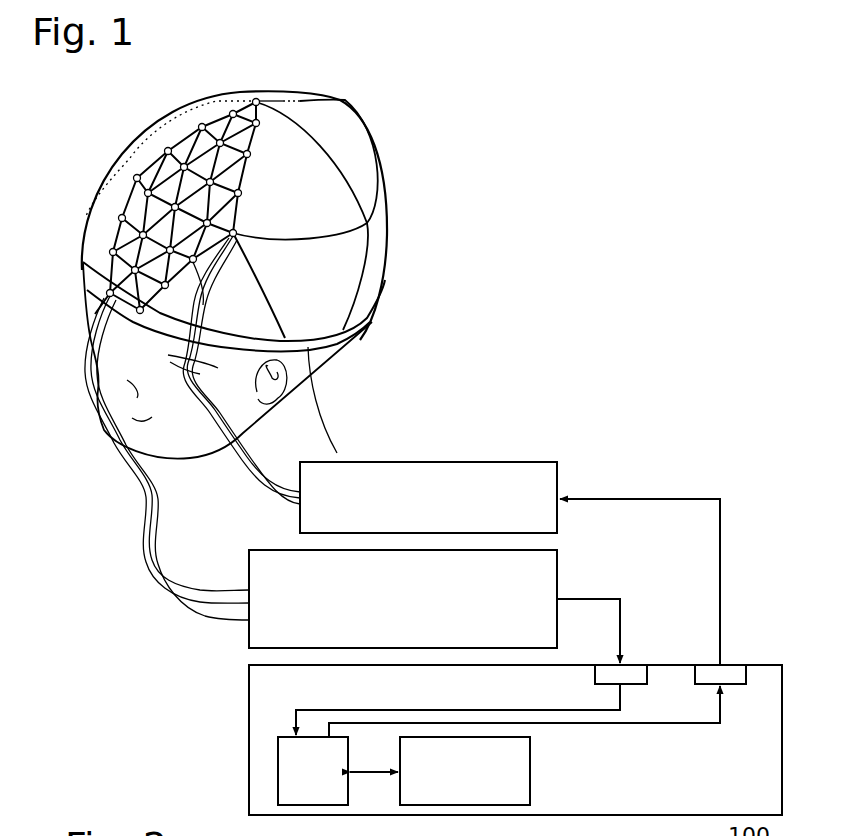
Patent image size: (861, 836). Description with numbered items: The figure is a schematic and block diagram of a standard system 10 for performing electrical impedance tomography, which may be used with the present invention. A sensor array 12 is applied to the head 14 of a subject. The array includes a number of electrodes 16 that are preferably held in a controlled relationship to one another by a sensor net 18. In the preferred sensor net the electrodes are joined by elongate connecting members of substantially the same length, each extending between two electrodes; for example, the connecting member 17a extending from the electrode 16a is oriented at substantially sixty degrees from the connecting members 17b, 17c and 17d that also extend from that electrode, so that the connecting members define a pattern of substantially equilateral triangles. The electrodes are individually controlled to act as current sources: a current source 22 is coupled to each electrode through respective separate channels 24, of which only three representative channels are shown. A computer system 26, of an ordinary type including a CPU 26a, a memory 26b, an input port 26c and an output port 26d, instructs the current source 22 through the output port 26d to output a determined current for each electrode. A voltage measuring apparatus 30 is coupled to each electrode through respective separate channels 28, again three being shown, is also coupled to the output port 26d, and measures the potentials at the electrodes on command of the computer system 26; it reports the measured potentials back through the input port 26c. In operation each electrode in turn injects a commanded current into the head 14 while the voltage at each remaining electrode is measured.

The system 10 is at (660, 208).
The sensor array 12 is at (300, 146).
The head 14 is at (362, 350).
The electrodes 16 is at (179, 193).
The electrode 16a is at (207, 130).
The connecting member 17a is at (187, 152).
The connecting member 17b is at (180, 146).
The connecting member 17c is at (256, 102).
The connecting member 17d is at (221, 120).
The sensor net 18 is at (293, 188).
The current source 22 is at (416, 524).
The channels 24 is at (245, 502).
The computer system 26 is at (515, 657).
The CPU 26a is at (331, 796).
The memory 26b is at (447, 796).
The input port 26c is at (637, 662).
The output port 26d is at (737, 662).
The channels 28 is at (149, 584).
The voltage measuring apparatus 30 is at (391, 637).